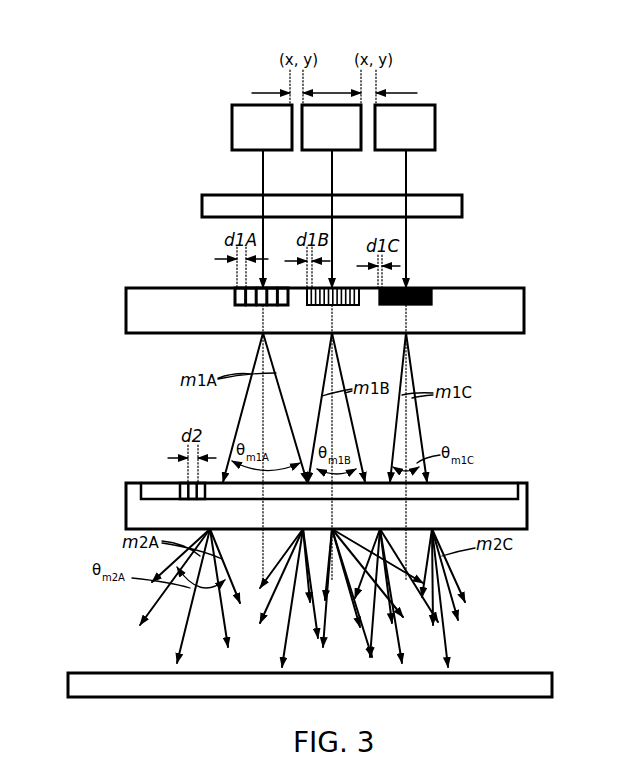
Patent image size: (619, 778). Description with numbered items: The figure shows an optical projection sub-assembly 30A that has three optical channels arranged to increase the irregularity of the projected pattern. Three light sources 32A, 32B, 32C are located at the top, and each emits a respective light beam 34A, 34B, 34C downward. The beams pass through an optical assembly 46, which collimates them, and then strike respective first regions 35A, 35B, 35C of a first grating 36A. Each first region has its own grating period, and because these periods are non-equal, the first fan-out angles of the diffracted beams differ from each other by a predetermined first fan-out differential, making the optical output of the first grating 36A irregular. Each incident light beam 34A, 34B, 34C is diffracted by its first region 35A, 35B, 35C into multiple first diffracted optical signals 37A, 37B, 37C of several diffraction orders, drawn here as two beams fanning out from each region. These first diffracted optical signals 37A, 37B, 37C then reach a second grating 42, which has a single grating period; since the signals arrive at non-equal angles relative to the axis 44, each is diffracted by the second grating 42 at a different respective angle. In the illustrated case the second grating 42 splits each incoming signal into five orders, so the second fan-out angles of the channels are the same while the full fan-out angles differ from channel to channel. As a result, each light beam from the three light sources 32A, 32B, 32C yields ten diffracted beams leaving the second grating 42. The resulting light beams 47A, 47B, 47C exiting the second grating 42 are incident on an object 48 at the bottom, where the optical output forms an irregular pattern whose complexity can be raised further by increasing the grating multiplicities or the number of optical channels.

The optical projection sub-assembly 30A is at (484, 52).
The light source 32A is at (262, 127).
The light source 32B is at (331, 127).
The light source 32C is at (405, 127).
The light beam 34A is at (263, 171).
The light beam 34B is at (332, 169).
The light beam 34C is at (406, 176).
The optical assembly 46 is at (462, 205).
The first region 35A is at (235, 298).
The first region 35B is at (350, 305).
The first region 35C is at (432, 297).
The first grating 36A is at (524, 313).
The first diffracted optical signal 37A is at (256, 359).
The first diffracted optical signal 37B is at (327, 356).
The first diffracted optical signal 37C is at (416, 373).
The axis 44 is at (262, 425).
The second grating 42 is at (527, 507).
The light beam 47A is at (165, 567).
The light beam 47B is at (402, 652).
The light beam 47C is at (447, 561).
The object 48 is at (552, 680).